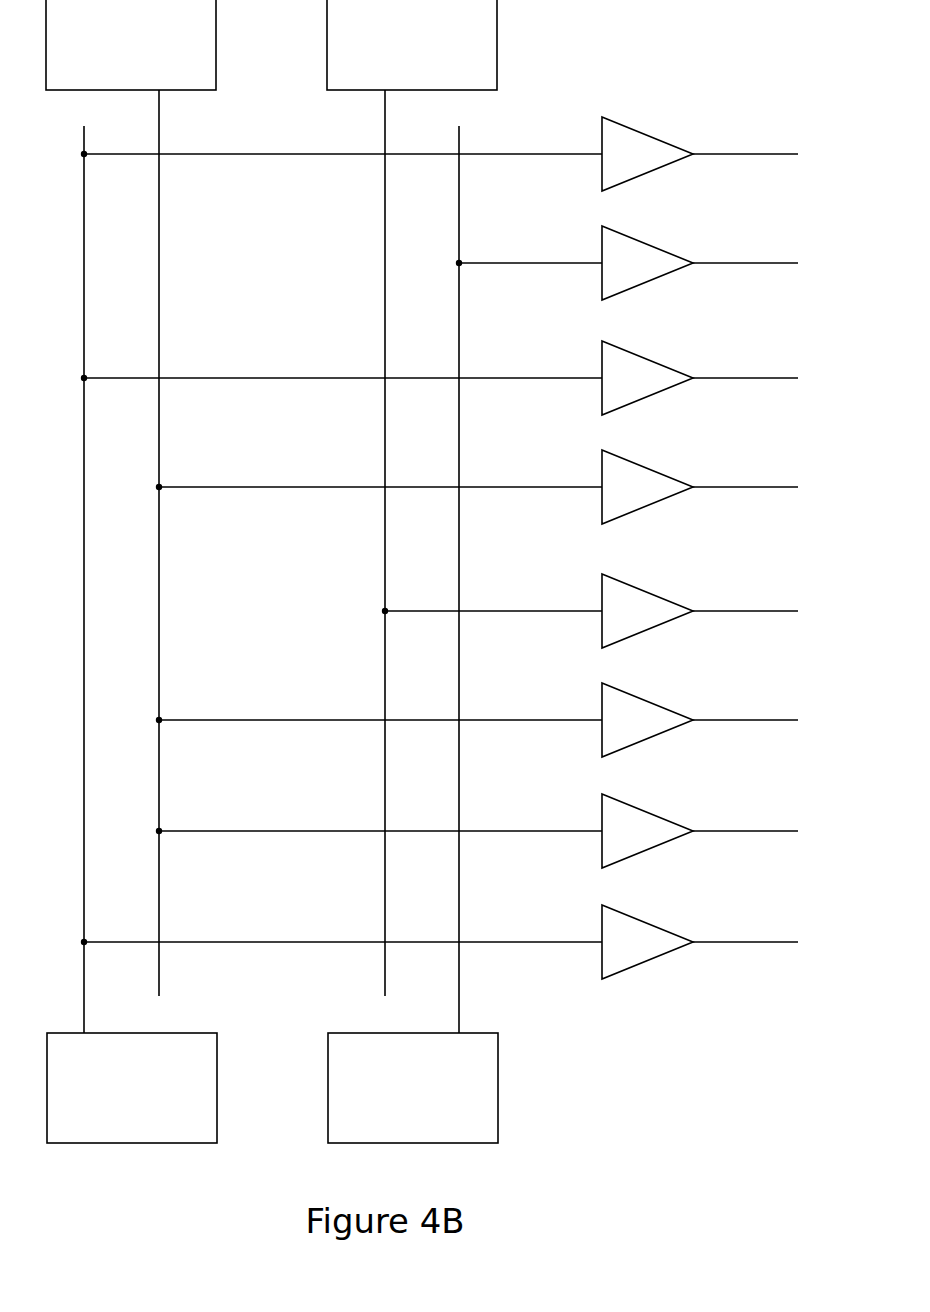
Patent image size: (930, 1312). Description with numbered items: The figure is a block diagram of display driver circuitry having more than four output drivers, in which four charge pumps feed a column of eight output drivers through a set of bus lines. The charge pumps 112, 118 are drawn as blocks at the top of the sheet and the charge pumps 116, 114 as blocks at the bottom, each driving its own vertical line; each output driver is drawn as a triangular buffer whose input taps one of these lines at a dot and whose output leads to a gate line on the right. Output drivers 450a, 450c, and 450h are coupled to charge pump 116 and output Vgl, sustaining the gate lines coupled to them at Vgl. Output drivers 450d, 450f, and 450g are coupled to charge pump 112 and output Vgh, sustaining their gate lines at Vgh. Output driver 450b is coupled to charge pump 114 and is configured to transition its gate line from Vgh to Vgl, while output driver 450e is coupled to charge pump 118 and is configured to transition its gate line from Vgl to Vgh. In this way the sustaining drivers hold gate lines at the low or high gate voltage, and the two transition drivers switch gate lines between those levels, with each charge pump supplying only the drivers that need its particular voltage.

The charge pump 112 is at (131, 45).
The charge pump 118 is at (412, 45).
The charge pump 116 is at (132, 1088).
The charge pump 114 is at (413, 1088).
The output driver 450a is at (439, 154).
The output driver 450b is at (627, 263).
The output driver 450c is at (439, 378).
The output driver 450d is at (477, 487).
The output driver 450e is at (590, 611).
The output driver 450f is at (477, 720).
The output driver 450g is at (477, 831).
The output driver 450h is at (439, 942).